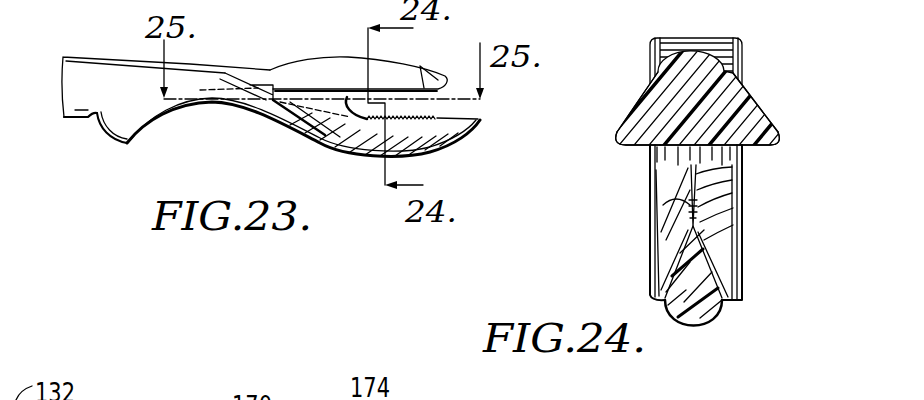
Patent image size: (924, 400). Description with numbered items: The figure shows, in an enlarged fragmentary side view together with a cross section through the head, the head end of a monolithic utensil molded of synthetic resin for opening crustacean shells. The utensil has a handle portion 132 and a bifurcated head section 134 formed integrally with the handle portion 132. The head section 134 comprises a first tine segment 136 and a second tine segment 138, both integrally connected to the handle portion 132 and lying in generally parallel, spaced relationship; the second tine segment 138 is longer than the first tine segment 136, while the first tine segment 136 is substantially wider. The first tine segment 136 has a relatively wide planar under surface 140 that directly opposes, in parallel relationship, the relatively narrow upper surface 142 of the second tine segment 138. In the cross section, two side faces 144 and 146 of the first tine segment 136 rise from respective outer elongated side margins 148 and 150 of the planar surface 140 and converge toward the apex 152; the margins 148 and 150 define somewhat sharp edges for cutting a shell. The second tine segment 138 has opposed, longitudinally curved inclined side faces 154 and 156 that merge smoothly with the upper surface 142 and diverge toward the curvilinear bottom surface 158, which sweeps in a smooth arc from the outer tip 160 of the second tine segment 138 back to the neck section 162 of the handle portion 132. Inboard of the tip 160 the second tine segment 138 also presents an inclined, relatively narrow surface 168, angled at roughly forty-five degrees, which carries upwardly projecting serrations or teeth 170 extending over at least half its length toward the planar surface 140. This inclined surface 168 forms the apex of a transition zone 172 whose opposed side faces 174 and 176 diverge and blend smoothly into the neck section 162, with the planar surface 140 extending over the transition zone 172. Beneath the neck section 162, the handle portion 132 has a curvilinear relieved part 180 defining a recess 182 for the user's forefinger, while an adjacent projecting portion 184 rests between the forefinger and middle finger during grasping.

In FIG. 23, the handle portion 132 is at (78, 48).
In FIG. 24, the handle portion 132 is at (745, 23).
In FIG. 23, the bifurcated head section 134 is at (336, 44).
In FIG. 23, the first tine segment 136 is at (447, 64).
In FIG. 24, the first tine segment 136 is at (639, 84).
In FIG. 23, the second tine segment 138 is at (347, 168).
In FIG. 24, the second tine segment 138 is at (685, 336).
In FIG. 24, the planar under surface 140 is at (655, 165).
In FIG. 24, the upper surface 142 is at (739, 234).
In FIG. 24, the side face 144 is at (638, 107).
In FIG. 24, the side face 146 is at (750, 110).
In FIG. 24, the outer elongated side margin 148 is at (622, 138).
In FIG. 24, the outer elongated side margin 150 is at (777, 140).
In FIG. 24, the apex 152 is at (712, 52).
In FIG. 24, the side face 154 is at (658, 268).
In FIG. 24, the side face 156 is at (737, 276).
In FIG. 24, the bottom surface 158 is at (710, 325).
In FIG. 23, the outer tip 160 is at (480, 122).
In FIG. 23, the neck section 162 is at (222, 80).
In FIG. 24, the inclined narrow surface 168 is at (737, 200).
In FIG. 24, the serrations or teeth 170 is at (663, 233).
In FIG. 24, the transition zone 172 is at (640, 166).
In FIG. 24, the side face 174 is at (737, 160).
In FIG. 24, the side face 176 is at (688, 196).
In FIG. 23, the curvilinear relieved part 180 is at (177, 112).
In FIG. 23, the recess 182 is at (216, 125).
In FIG. 23, the projecting portion 184 is at (127, 147).